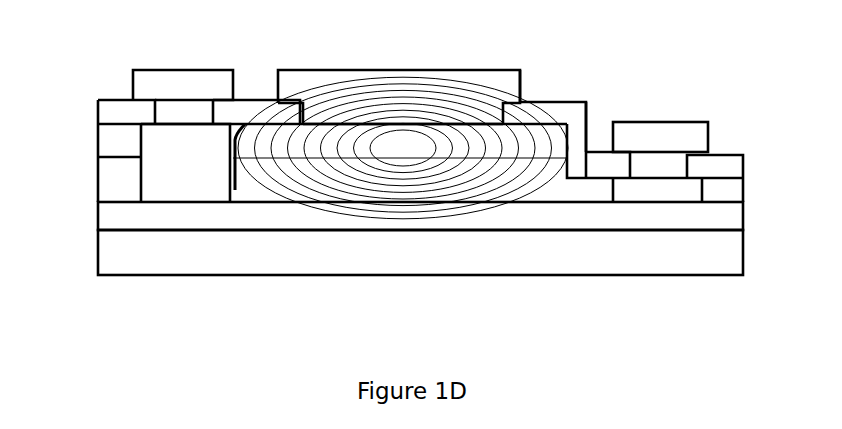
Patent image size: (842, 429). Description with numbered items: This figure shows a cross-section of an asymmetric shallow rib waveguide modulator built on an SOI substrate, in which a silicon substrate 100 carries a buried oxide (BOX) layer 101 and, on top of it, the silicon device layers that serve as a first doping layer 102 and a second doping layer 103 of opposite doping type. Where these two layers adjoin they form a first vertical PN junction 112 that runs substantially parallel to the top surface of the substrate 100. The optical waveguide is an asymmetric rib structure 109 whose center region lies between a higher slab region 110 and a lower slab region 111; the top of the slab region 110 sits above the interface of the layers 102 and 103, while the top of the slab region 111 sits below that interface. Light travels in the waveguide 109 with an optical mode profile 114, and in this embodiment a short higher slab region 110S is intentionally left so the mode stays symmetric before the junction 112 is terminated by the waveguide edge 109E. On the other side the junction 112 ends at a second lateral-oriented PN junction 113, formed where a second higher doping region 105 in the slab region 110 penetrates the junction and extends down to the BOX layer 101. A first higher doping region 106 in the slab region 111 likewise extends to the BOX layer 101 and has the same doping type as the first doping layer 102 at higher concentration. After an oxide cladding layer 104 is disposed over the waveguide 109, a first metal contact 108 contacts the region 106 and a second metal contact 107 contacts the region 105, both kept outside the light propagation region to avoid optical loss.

The silicon substrate 100 is at (110, 252).
The buried oxide (BOX) layer 101 is at (107, 217).
The first doping layer 102 is at (107, 178).
The second doping layer 103 is at (103, 143).
The oxide cladding layer 104 is at (112, 118).
The second higher doping region 105 is at (170, 145).
The first higher doping region 106 is at (628, 187).
The second metal contact 107 is at (162, 82).
The first metal contact 108 is at (680, 140).
The asymmetric rib structure (waveguide) 109 is at (327, 100).
The waveguide edge 109E is at (572, 178).
The slab region (higher slab) 110 is at (280, 100).
The short higher slab region 110S is at (527, 112).
The slab region (lower slab) 111 is at (592, 150).
The first vertical PN junction 112 is at (467, 140).
The second lateral-oriented PN junction 113 is at (245, 124).
The optical mode profile 114 is at (460, 84).